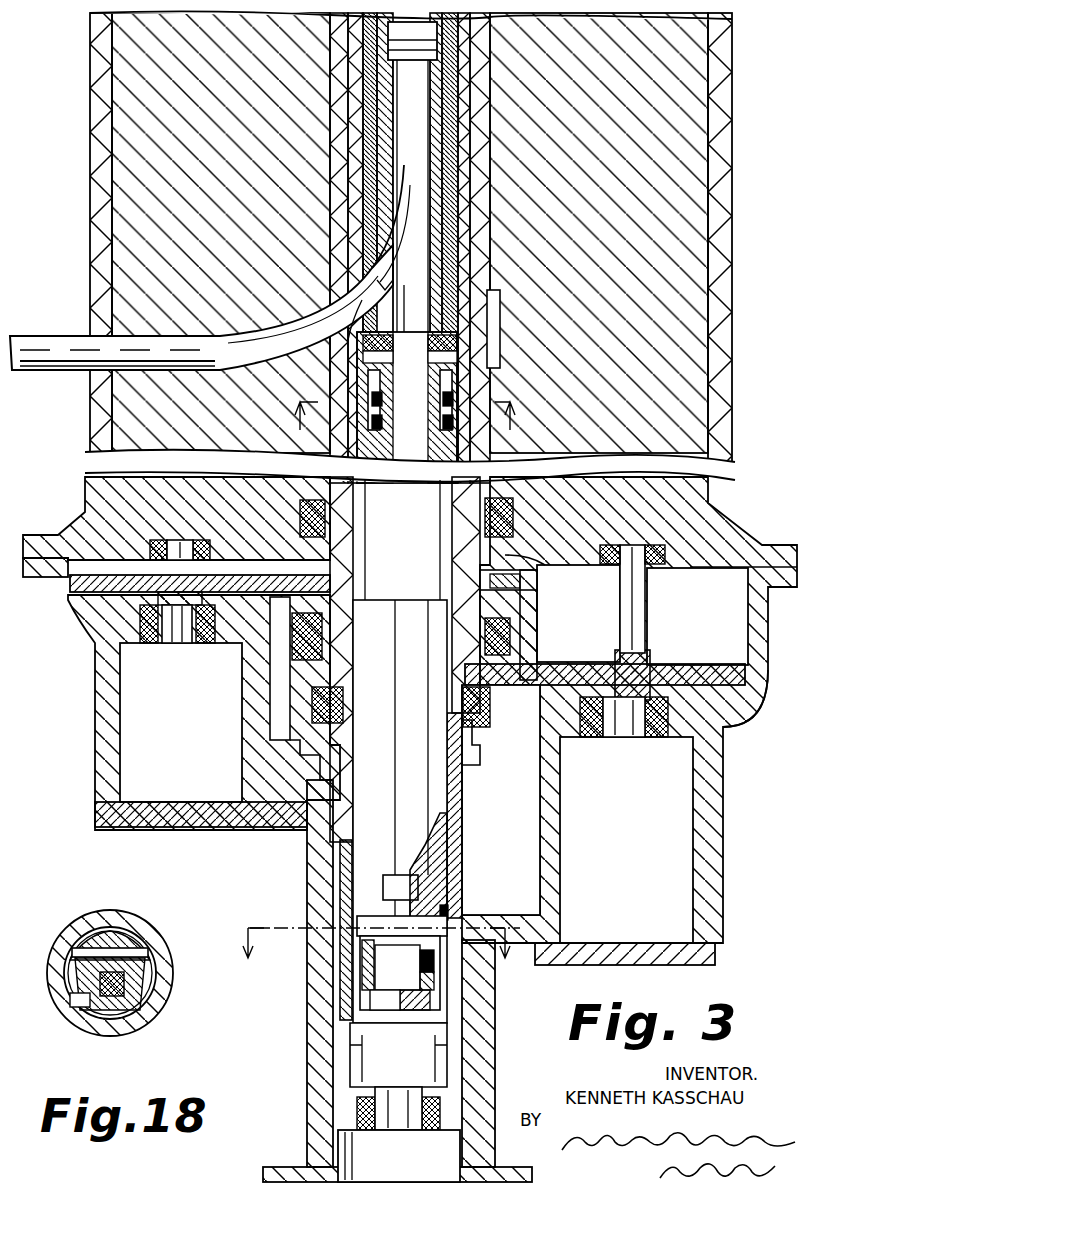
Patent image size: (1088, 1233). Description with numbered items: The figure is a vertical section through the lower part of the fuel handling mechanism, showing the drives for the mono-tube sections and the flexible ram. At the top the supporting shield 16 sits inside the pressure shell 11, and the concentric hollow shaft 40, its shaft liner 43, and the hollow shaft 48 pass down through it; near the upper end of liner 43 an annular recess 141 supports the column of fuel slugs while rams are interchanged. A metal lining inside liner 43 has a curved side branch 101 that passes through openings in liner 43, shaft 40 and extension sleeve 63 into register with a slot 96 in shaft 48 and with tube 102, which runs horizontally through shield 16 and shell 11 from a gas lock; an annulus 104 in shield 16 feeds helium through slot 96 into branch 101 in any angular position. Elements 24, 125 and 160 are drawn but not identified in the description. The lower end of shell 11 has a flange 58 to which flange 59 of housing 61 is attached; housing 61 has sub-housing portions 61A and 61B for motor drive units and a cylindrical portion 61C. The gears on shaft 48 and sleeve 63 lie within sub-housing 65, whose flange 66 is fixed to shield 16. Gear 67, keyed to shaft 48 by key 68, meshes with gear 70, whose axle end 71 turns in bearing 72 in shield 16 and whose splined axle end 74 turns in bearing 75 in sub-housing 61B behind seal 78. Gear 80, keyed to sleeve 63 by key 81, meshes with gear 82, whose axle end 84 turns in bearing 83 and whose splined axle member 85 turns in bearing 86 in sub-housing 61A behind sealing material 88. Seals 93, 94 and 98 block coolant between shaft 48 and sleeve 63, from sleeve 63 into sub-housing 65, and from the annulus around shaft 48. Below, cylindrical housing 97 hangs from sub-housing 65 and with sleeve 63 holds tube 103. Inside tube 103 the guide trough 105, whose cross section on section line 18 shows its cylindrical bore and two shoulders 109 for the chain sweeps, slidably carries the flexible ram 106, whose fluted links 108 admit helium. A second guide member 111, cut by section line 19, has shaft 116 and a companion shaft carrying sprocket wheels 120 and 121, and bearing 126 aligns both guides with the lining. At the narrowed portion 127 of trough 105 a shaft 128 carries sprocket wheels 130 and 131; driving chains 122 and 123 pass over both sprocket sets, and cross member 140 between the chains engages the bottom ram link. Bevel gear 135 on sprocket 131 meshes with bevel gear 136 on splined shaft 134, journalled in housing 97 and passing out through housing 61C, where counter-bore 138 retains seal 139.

In FIG. 3, the pressure shell 11 is at (726, 96).
In FIG. 3, the supporting shield 16 is at (620, 104).
In FIG. 3, the inner liner 24 is at (455, 27).
In FIG. 3, the hollow shaft 40 is at (340, 72).
In FIG. 3, the shaft liner 43 is at (452, 58).
In FIG. 3, the hollow shaft 48 is at (352, 33).
In FIG. 3, the annular recess 141 is at (432, 45).
In FIG. 3, the inner passage 160 is at (400, 212).
In FIG. 3, the tube 102 is at (27, 338).
In FIG. 3, the curved side branch 101 is at (386, 290).
In FIG. 3, the flexible ram member 106 is at (405, 290).
In FIG. 18, the flexible ram member 106 is at (66, 1005).
In FIG. 3, the slot 96 is at (360, 314).
In FIG. 3, the sprocket wheel 120 is at (357, 378).
In FIG. 3, the bearing 126 is at (460, 340).
In FIG. 3, the washer 125 is at (460, 358).
In FIG. 3, the second guide member 111 is at (460, 376).
In FIG. 3, the sprocket wheel 121 is at (462, 396).
In FIG. 3, the annulus 104 is at (496, 298).
In FIG. 3, the section line 19— 19 is at (404, 425).
In FIG. 3, the flange 58 is at (752, 545).
In FIG. 3, the flange 59 is at (782, 589).
In FIG. 3, the housing 61 is at (766, 676).
In FIG. 3, the sub-housing portion 61A is at (726, 842).
In FIG. 3, the sub-housing portion 61B is at (92, 755).
In FIG. 3, the cylindrical housing portion 61C is at (304, 1002).
In FIG. 3, the gear 67 is at (565, 594).
In FIG. 3, the key 68 is at (540, 580).
In FIG. 3, the flange 66 is at (535, 555).
In FIG. 3, the seal 98 is at (508, 512).
In FIG. 3, the sealing material 93 is at (512, 636).
In FIG. 3, the sub-housing 65 is at (537, 652).
In FIG. 3, the gear 82 is at (690, 666).
In FIG. 3, the axle end 84 is at (640, 592).
In FIG. 3, the bearing 83 is at (652, 567).
In FIG. 3, the bearing 86 is at (700, 735).
In FIG. 3, the axle member 85 is at (638, 738).
In FIG. 3, the sealing material 88 is at (595, 740).
In FIG. 3, the seal 94 is at (482, 742).
In FIG. 3, the gear 80 is at (488, 696).
In FIG. 3, the gear 70 is at (70, 586).
In FIG. 3, the bearing 75 is at (145, 612).
In FIG. 3, the seal 78 is at (208, 642).
In FIG. 3, the axle end 74 is at (163, 646).
In FIG. 3, the axle end 71 is at (173, 545).
In FIG. 3, the bearing 72 is at (198, 545).
In FIG. 3, the shaft 116 is at (322, 748).
In FIG. 3, the key 81 is at (352, 645).
In FIG. 3, the integral extension sleeve 63 is at (356, 572).
In FIG. 3, the tube 103 is at (405, 765).
In FIG. 18, the tube 103 is at (152, 938).
In FIG. 3, the shallow curved flutings 108 is at (376, 876).
In FIG. 3, the cylindrical housing 97 is at (456, 882).
In FIG. 18, the cylindrical housing 97 is at (160, 960).
In FIG. 3, the driving chain 123 is at (452, 909).
In FIG. 3, the driving chain 122 is at (357, 922).
In FIG. 3, the cross member 140 is at (418, 940).
In FIG. 18, the cross member 140 is at (95, 946).
In FIG. 3, the sprocket wheel 130 is at (362, 956).
In FIG. 3, the narrowed portion 127 is at (434, 966).
In FIG. 3, the shaft 128 is at (440, 982).
In FIG. 3, the sprocket wheel 131 is at (440, 996).
In FIG. 3, the bevel gear 135 is at (445, 1010).
In FIG. 3, the bevel gear 136 is at (345, 1045).
In FIG. 3, the counter-bore 138 is at (446, 1112).
In FIG. 3, the seal 139 is at (412, 1125).
In FIG. 3, the shaft 134 is at (390, 1130).
In FIG. 3, the section line 18— 18 is at (376, 945).
In FIG. 18, the guide trough 105 is at (145, 998).
In FIG. 18, the angular indentations 109 is at (140, 1010).